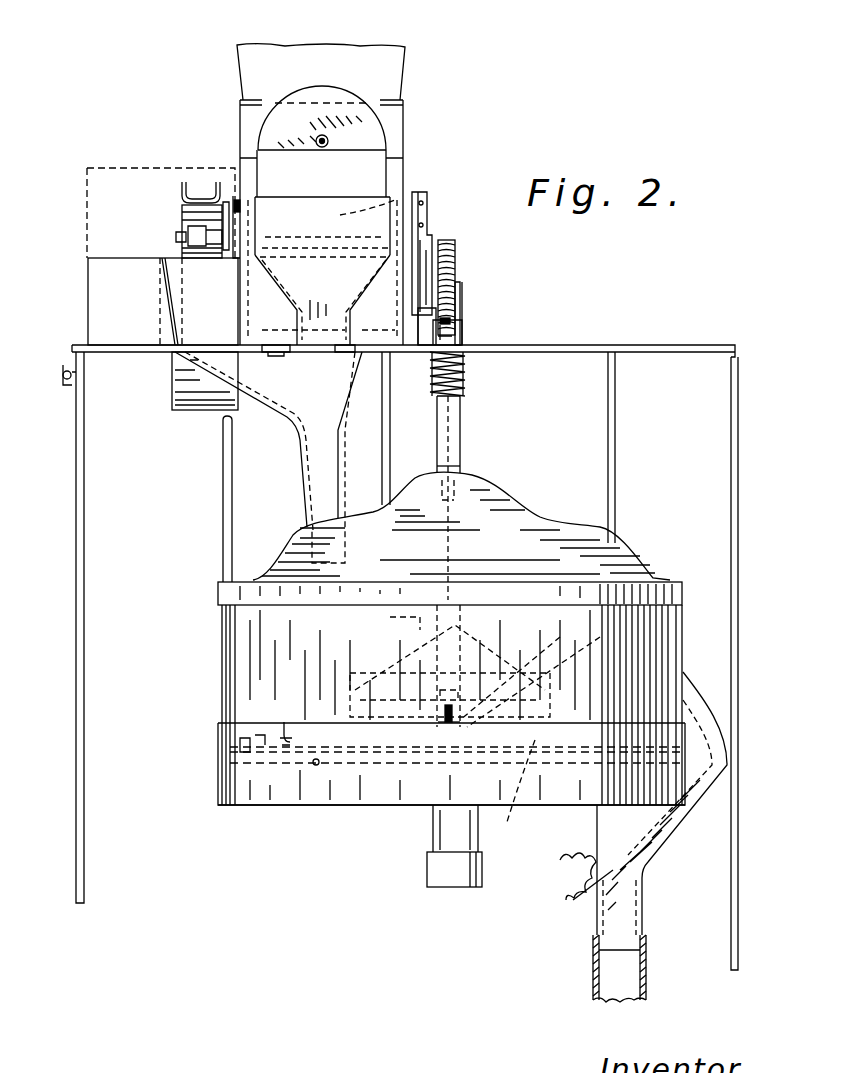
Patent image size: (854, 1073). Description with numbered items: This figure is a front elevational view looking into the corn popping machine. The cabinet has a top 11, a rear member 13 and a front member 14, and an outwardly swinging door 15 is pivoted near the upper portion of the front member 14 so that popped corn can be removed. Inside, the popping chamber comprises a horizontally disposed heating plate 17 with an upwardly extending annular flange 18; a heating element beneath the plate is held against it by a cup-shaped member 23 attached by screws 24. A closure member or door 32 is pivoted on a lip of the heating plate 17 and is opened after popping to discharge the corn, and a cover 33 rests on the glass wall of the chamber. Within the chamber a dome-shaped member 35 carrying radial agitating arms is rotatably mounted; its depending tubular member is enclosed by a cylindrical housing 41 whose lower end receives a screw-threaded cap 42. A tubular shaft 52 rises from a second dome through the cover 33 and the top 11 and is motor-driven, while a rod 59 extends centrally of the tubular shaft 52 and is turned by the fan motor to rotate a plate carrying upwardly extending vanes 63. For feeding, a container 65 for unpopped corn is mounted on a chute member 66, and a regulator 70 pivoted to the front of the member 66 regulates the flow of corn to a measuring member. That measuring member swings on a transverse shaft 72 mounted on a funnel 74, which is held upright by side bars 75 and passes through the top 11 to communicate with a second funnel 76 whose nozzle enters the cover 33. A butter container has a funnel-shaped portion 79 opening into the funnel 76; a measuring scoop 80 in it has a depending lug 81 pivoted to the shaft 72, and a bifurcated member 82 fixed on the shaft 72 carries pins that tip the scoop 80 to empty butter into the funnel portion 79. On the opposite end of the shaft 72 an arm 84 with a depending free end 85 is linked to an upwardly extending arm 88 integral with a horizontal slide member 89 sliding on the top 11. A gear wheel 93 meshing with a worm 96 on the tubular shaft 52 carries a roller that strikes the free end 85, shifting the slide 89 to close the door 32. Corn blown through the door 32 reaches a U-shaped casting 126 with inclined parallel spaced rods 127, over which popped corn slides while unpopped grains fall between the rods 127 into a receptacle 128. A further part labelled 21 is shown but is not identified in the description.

The top 11 is at (575, 345).
The rear member 13 is at (739, 472).
The front member 14 is at (78, 374).
The outwardly swinging door 15 is at (86, 692).
The heating plate 17 is at (225, 780).
The annular flange 18 is at (240, 740).
The posts 21 is at (222, 530).
The cup-shaped member 23 is at (348, 806).
The screws 24 is at (315, 765).
The closure member or door 32 is at (630, 567).
The cover 33 is at (545, 516).
The dome-shaped member 35 is at (285, 735).
The cylindrical housing 41 is at (437, 825).
The screw-threaded cap 42 is at (462, 888).
The tubular shaft 52 is at (462, 458).
The rod 59 is at (458, 464).
The vanes 63 is at (475, 726).
The container 65 is at (356, 57).
The member 66 is at (397, 138).
The regulator 70 is at (350, 93).
The transverse shaft 72 is at (403, 200).
The funnel 74 is at (405, 283).
The side bars 75 is at (240, 200).
The second funnel 76 is at (278, 393).
The funnel-shaped portion 79 is at (185, 300).
The measuring scoop 80 is at (186, 183).
The depending lug 81 is at (180, 233).
The bifurcated member 82 is at (185, 210).
The arm 84 is at (431, 240).
The depending free end 85 is at (426, 212).
The upwardly extending arm 88 is at (455, 255).
The horizontal slide member 89 is at (440, 325).
The gear wheel 93 is at (391, 420).
The worm 96 is at (467, 388).
The U-shaped casting 126 is at (700, 812).
The parallel spaced rods 127 is at (645, 832).
The receptacle 128 is at (638, 980).